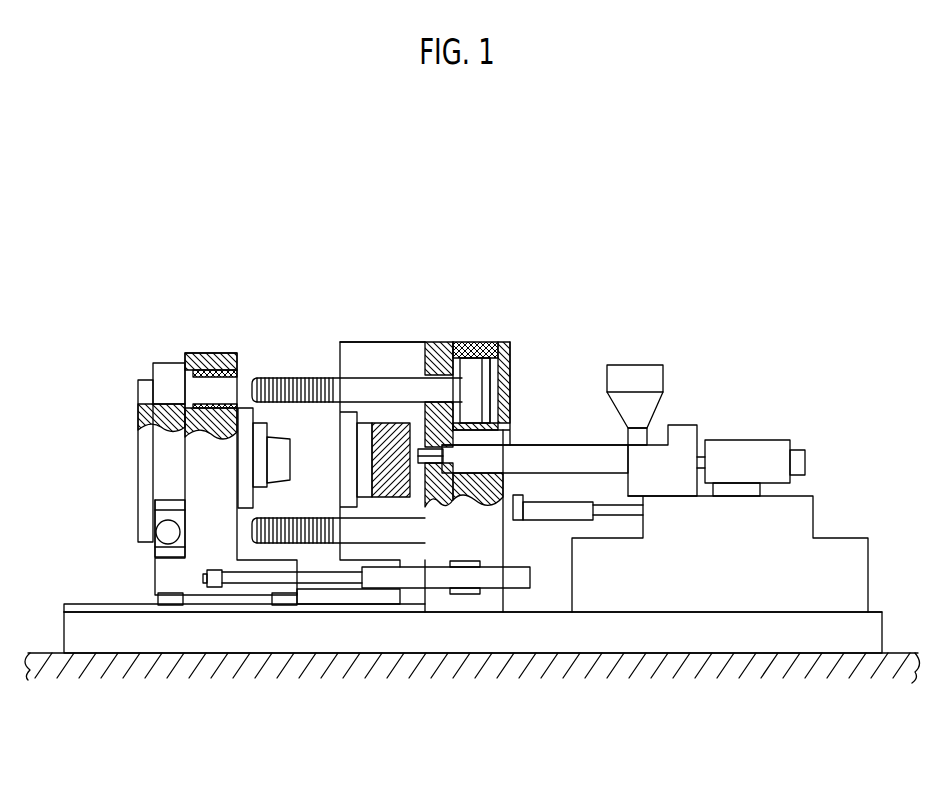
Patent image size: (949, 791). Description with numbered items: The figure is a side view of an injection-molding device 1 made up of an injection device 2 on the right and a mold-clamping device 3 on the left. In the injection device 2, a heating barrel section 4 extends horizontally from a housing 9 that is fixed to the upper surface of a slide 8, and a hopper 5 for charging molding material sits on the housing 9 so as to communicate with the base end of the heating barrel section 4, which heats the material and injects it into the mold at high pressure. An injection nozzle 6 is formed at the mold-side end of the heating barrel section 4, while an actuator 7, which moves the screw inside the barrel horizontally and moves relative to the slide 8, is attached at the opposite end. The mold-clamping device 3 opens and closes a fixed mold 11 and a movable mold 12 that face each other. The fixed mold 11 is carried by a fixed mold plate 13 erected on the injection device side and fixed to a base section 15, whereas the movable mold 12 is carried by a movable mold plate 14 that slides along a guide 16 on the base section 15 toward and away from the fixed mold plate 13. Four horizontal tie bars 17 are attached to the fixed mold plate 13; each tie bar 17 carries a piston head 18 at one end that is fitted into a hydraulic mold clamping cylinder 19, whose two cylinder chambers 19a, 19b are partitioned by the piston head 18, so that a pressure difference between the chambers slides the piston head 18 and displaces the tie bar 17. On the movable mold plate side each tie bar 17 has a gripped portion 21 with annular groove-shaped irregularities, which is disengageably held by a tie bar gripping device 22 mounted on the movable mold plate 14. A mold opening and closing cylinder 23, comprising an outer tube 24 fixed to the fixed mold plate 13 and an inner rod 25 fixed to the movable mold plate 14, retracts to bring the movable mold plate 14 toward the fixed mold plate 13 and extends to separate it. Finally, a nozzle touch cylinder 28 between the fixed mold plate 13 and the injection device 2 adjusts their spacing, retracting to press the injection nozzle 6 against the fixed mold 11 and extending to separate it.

The injection-molding device 1 is at (474, 240).
The injection device 2 is at (641, 348).
The mold-clamping device 3 is at (328, 312).
The heating barrel section 4 is at (551, 444).
The hopper 5 is at (662, 380).
The injection nozzle 6 is at (389, 490).
The actuator 7 is at (770, 440).
The slide 8 is at (803, 524).
The housing 9 is at (684, 437).
The fixed mold 11 is at (401, 422).
The movable mold 12 is at (262, 425).
The fixed mold plate 13 is at (439, 372).
The movable mold plate 14 is at (210, 352).
The base section 15 is at (315, 633).
The guide 16 is at (117, 603).
The tie bar 17 is at (372, 388).
The piston head 18 is at (488, 368).
The mold clamping cylinder 19 is at (500, 373).
The cylinder chamber 19a is at (510, 367).
The cylinder chamber 19b is at (466, 365).
The gripped portion 21 is at (300, 384).
The tie bar gripping device 22 is at (165, 362).
The mold opening and closing cylinder 23 is at (438, 605).
The outer tube 24 is at (493, 590).
The inner rod 25 is at (242, 585).
The nozzle touch cylinder 28 is at (555, 510).